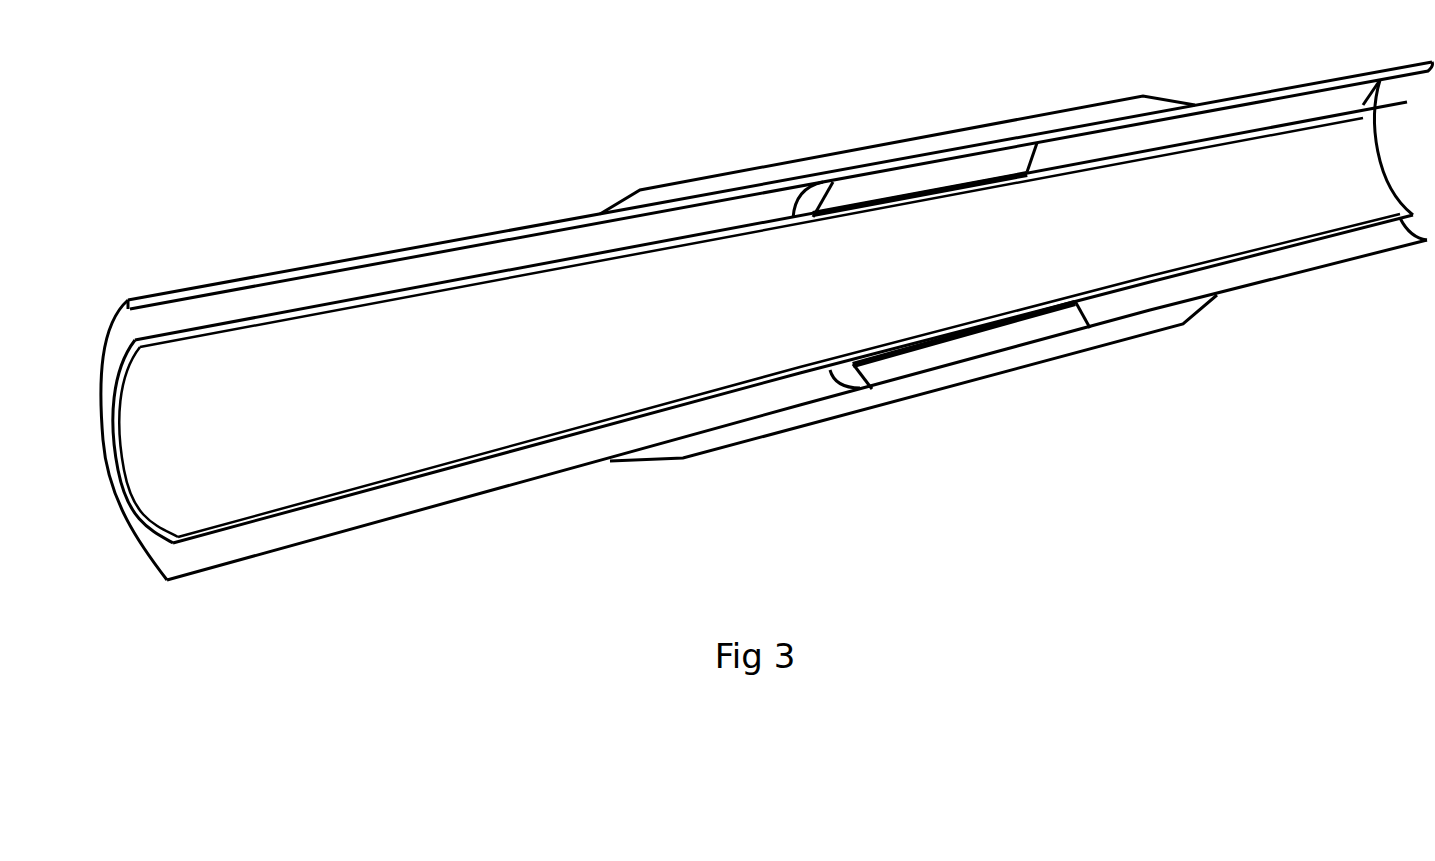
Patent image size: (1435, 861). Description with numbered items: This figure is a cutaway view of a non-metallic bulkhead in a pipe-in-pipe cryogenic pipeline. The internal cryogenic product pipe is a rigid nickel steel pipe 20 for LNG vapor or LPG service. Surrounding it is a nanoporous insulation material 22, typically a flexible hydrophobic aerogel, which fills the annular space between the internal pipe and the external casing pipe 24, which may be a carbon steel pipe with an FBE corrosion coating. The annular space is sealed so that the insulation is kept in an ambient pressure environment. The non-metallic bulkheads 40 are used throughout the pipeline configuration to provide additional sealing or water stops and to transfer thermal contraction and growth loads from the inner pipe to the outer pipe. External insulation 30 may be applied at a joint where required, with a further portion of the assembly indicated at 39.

The nickel steel pipe 20 is at (203, 513).
The nanoporous insulation material 22 is at (497, 472).
The external casing pipe 24 is at (192, 305).
The external insulation 30 is at (1148, 97).
The collar lower portion 39 is at (1252, 287).
The non-metallic bulkheads 40 is at (908, 183).